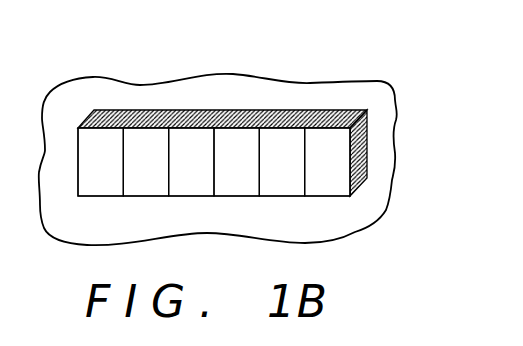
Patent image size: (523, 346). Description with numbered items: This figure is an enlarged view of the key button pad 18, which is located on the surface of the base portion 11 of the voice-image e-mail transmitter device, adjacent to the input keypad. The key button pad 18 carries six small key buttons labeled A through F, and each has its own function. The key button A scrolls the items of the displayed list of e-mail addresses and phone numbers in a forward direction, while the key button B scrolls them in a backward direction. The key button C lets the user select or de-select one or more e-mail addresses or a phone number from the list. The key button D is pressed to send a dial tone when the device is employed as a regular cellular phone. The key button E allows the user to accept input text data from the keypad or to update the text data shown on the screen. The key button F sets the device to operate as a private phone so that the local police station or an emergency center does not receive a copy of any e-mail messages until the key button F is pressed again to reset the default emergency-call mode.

The base portion 11 is at (322, 100).
The key button pad 18 is at (222, 102).
The key button A is at (100, 162).
The key button B is at (145, 162).
The key button C is at (191, 162).
The key button D is at (236, 162).
The key button E is at (281, 162).
The key button F is at (327, 162).